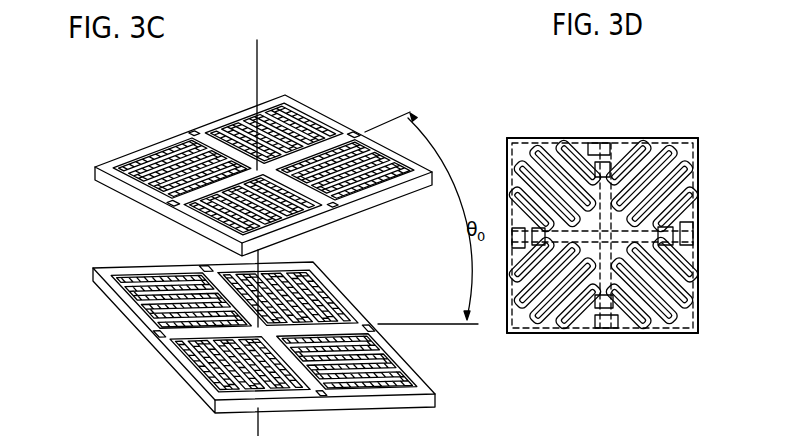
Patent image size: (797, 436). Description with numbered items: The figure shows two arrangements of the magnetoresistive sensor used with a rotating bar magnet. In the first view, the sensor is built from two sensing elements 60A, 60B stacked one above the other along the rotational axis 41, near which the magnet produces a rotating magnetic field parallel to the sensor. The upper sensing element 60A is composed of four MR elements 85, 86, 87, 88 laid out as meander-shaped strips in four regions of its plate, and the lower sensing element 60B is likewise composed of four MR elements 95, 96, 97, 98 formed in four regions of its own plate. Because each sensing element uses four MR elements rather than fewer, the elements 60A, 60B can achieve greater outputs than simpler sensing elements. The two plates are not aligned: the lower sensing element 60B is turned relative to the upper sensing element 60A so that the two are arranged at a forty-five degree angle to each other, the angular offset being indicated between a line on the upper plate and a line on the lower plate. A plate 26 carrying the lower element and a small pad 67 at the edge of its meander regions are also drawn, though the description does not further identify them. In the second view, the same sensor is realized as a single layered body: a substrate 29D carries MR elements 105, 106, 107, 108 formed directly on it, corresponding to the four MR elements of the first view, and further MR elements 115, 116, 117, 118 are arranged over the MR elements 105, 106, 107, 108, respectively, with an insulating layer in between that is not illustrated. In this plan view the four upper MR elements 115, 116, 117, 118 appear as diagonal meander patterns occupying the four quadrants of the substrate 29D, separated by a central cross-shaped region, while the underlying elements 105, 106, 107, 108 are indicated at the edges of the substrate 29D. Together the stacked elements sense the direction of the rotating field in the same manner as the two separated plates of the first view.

In FIG. 3C, the rotational axis 41 is at (257, 78).
In FIG. 3C, the sensing element 60A is at (94, 152).
In FIG. 3C, the sensing element 60B is at (443, 409).
In FIG. 3C, the MR element 85 is at (332, 120).
In FIG. 3C, the MR element 86 is at (143, 153).
In FIG. 3C, the MR element 87 is at (295, 215).
In FIG. 3C, the MR element 88 is at (382, 197).
In FIG. 3C, the substrate 26 is at (360, 307).
In FIG. 3C, the contact pad 67 is at (202, 270).
In FIG. 3C, the MR element 95 is at (330, 291).
In FIG. 3C, the MR element 96 is at (127, 298).
In FIG. 3C, the MR element 97 is at (237, 387).
In FIG. 3C, the MR element 98 is at (357, 390).
In FIG. 3D, the substrate 29D is at (683, 333).
In FIG. 3D, the MR element 105 is at (650, 143).
In FIG. 3D, the MR element 106 is at (508, 138).
In FIG. 3D, the MR element 107 is at (515, 332).
In FIG. 3D, the MR element 108 is at (697, 323).
In FIG. 3D, the MR element 115 is at (688, 170).
In FIG. 3D, the MR element 116 is at (513, 172).
In FIG. 3D, the MR element 117 is at (540, 328).
In FIG. 3D, the MR element 118 is at (642, 325).